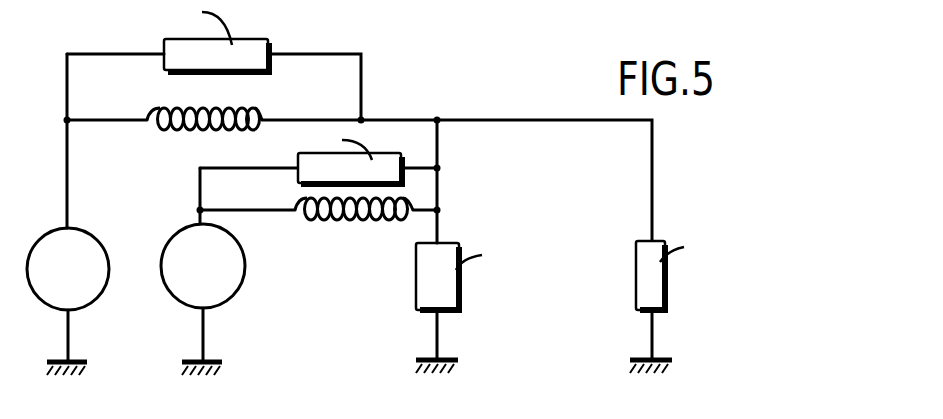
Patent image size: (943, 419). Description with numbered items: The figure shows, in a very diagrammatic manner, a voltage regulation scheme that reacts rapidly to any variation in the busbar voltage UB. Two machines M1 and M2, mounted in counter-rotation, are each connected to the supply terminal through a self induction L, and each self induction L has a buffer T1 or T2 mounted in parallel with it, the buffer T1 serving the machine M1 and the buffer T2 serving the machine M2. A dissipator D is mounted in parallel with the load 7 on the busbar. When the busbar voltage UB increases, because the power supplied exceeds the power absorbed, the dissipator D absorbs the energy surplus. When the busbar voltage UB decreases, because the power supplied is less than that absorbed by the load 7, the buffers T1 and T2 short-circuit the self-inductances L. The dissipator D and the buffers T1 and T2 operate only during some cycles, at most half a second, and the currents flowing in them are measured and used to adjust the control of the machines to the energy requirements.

The load 7 is at (687, 272).
The buffer T1 is at (197, 37).
The buffer T2 is at (332, 159).
The self induction L is at (280, 166).
The machine M1 is at (68, 269).
The machine M2 is at (203, 266).
The dissipator D is at (498, 272).
The busbar voltage UB is at (442, 104).